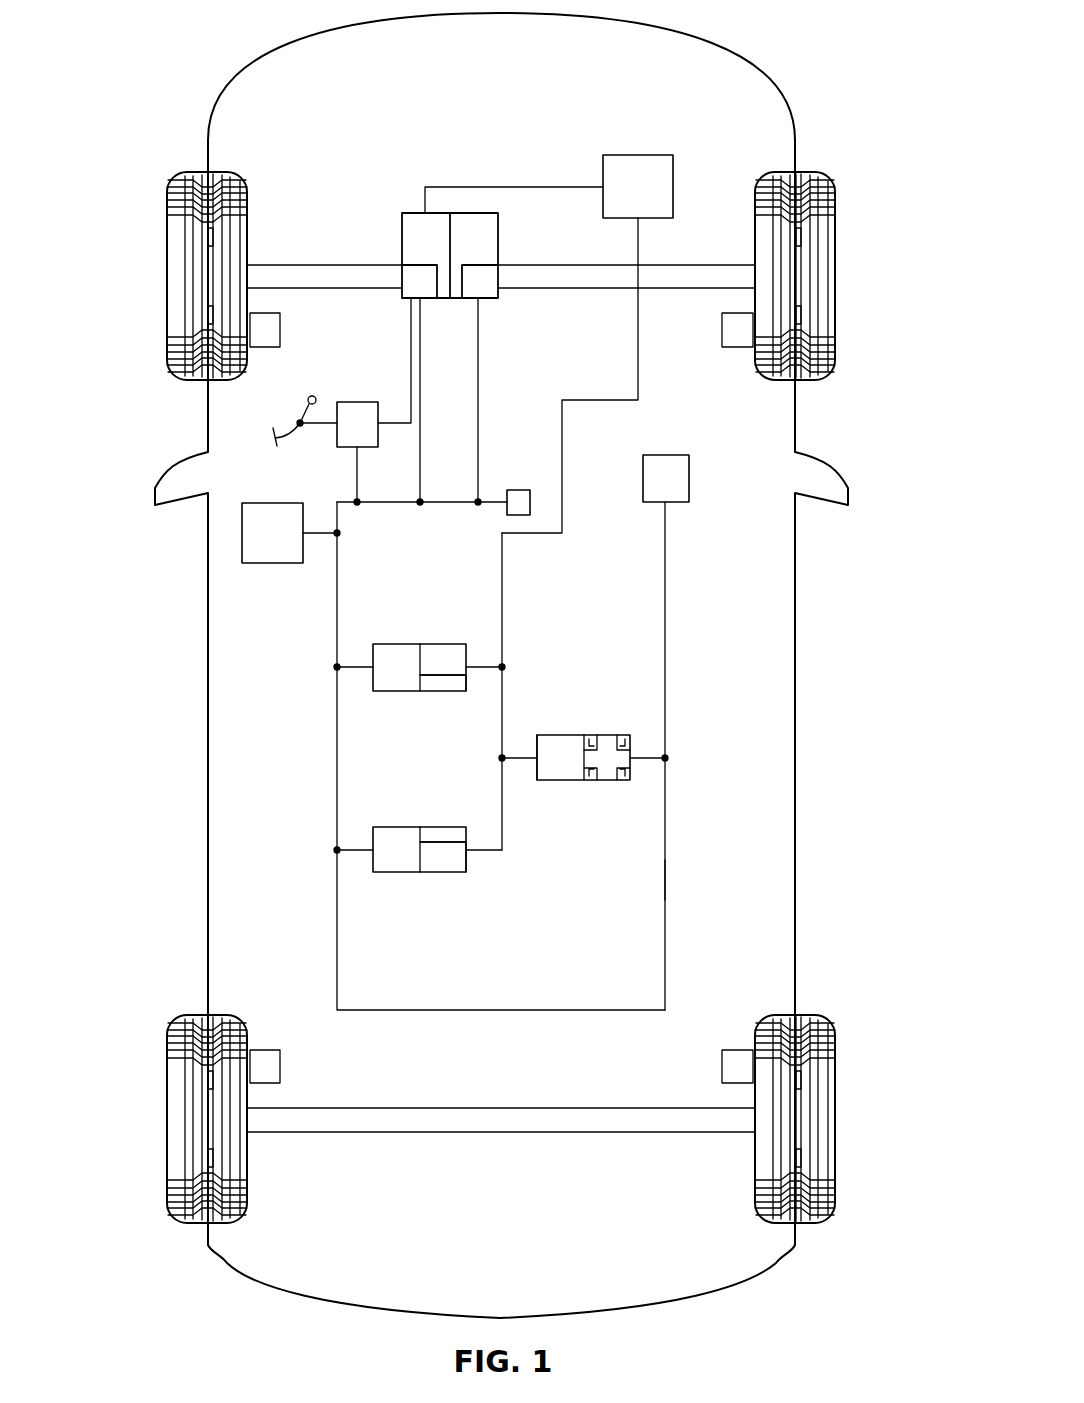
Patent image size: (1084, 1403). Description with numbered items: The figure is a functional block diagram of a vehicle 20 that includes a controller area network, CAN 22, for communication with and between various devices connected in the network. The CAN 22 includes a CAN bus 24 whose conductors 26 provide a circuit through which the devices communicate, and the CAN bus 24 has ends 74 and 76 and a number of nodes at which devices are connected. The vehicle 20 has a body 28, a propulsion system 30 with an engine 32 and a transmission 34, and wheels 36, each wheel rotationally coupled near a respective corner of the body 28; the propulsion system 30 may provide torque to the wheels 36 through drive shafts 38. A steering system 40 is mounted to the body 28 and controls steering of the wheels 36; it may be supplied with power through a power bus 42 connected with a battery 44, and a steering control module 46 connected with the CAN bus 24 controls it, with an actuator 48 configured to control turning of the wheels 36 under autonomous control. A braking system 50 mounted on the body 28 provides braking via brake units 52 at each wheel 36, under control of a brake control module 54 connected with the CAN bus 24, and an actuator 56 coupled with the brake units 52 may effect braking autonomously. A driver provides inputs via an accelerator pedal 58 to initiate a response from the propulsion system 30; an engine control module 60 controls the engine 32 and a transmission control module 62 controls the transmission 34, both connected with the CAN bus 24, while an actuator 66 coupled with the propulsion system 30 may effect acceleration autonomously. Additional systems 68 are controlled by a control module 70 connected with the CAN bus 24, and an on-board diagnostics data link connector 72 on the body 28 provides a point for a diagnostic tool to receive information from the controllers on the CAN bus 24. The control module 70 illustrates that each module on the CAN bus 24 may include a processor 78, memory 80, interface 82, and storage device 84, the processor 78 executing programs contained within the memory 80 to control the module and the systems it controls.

The vehicle 20 is at (795, 32).
The CAN 22 is at (296, 748).
The CAN bus 24 is at (667, 625).
The conductors 26 is at (667, 860).
The body 28 is at (797, 965).
The propulsion system 30 is at (464, 264).
The engine 32 is at (405, 228).
The transmission 34 is at (500, 235).
The wheels 36 is at (167, 278).
The drive shafts 38 is at (305, 265).
The steering system 40 is at (445, 872).
The power bus 42 is at (501, 737).
The battery 44 is at (645, 155).
The steering control module 46 is at (392, 872).
The actuator 48 is at (445, 832).
The braking system 50 is at (440, 644).
The brake units 52 is at (282, 335).
The brake control module 54 is at (392, 692).
The actuator 56 is at (445, 691).
The accelerator pedal 58 is at (275, 440).
The engine control module 60 is at (410, 265).
The transmission control module 62 is at (488, 300).
The actuator 66 is at (360, 402).
The additional systems 68 is at (560, 780).
The control module 70 is at (583, 761).
The on-board diagnostics data link connector 72 is at (242, 533).
The end 74 is at (507, 502).
The end 76 is at (675, 502).
The processor 78 is at (590, 735).
The memory 80 is at (622, 735).
The interface 82 is at (590, 780).
The storage device 84 is at (622, 780).